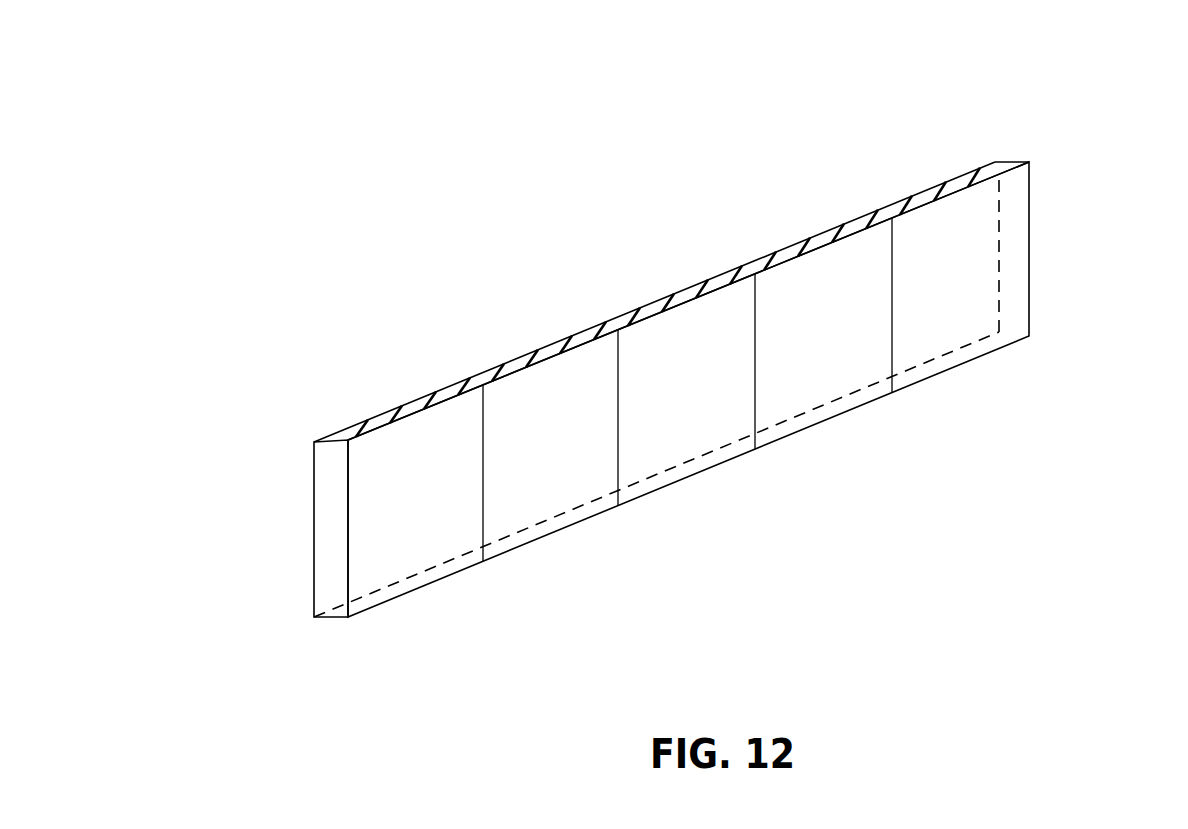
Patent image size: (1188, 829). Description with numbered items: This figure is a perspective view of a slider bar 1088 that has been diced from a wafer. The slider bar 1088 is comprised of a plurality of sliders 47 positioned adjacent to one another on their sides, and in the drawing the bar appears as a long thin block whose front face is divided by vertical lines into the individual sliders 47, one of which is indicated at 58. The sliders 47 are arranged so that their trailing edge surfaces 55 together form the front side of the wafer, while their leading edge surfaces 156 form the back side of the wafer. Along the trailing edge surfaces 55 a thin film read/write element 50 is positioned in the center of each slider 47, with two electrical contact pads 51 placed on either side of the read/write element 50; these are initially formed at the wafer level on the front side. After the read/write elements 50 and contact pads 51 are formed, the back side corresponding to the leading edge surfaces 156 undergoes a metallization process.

The slider 47 is at (322, 538).
The thin film read/write element 50 is at (397, 412).
The electrical contact pad 51 is at (343, 433).
The trailing edge surface 55 is at (1005, 160).
The panel section 58 is at (418, 495).
The leading edge surface 156 is at (395, 598).
The slider bar 1088 is at (1033, 254).